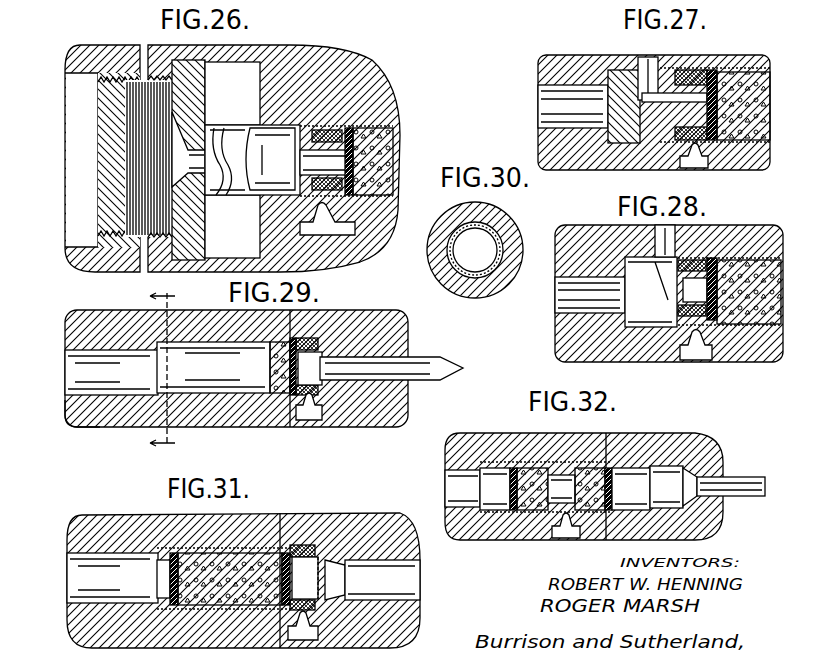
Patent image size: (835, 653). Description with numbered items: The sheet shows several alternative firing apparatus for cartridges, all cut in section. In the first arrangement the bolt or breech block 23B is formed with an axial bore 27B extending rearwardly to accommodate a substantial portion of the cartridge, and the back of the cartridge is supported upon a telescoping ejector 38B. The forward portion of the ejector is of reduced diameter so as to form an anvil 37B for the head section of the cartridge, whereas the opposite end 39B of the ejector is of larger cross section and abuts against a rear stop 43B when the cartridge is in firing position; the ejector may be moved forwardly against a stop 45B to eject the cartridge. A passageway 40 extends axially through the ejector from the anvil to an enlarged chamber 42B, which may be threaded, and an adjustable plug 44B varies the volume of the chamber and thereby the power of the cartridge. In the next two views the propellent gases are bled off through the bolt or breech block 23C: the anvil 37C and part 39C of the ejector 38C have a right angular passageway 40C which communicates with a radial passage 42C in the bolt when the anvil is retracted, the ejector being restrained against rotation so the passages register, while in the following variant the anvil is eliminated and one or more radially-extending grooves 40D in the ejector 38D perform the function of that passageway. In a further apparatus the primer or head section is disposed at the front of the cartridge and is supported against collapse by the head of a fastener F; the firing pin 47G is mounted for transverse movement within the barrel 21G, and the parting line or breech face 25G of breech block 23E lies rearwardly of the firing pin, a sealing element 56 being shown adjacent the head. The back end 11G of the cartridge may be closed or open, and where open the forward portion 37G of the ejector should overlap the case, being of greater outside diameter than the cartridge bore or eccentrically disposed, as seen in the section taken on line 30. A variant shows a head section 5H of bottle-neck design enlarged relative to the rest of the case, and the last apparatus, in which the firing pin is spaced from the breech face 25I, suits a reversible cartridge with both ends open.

In FIG. 26, the opposite end of ejector 39B is at (110, 62).
In FIG. 26, the rear stop 43B is at (78, 76).
In FIG. 26, the adjustable plug 44B is at (97, 202).
In FIG. 26, the enlarged chamber 42B is at (148, 156).
In FIG. 26, the stop 45B is at (260, 78).
In FIG. 26, the telescoping ejector 38B is at (224, 130).
In FIG. 26, the anvil 37B is at (270, 159).
In FIG. 26, the passageway 40 is at (310, 165).
In FIG. 26, the bolt or breech block 23B is at (380, 92).
In FIG. 26, the axial bore 27B is at (398, 130).
In FIG. 27, the bolt or breech block 23C is at (544, 60).
In FIG. 27, the tube 38C is at (545, 106).
In FIG. 27, the radial passage 42C is at (645, 56).
In FIG. 27, the part of ejector 39C is at (672, 68).
In FIG. 27, the anvil 37C is at (710, 70).
In FIG. 27, the right angular passageway 40C is at (674, 103).
In FIG. 28, the radially-extending grooves 40D is at (651, 292).
In FIG. 30, the breech block 23E is at (480, 294).
In FIG. 29, the breech block 23E is at (90, 422).
In FIG. 30, the forward portion of ejector (ejector nose) 37G is at (492, 238).
In FIG. 29, the forward portion of ejector (ejector nose) 37G is at (111, 372).
In FIG. 30, the back end of cartridge 11G is at (480, 228).
In FIG. 29, the back end of cartridge 11G is at (163, 376).
In FIG. 29, the sealing ring 56 is at (306, 338).
In FIG. 29, the fastener F is at (440, 360).
In FIG. 29, the parting line or breech face 25G is at (282, 412).
In FIG. 29, the firing pin 47G is at (300, 426).
In FIG. 29, the barrel 21G is at (360, 420).
In FIG. 29, the section line 30 is at (173, 370).
In FIG. 31, the head section 5H is at (302, 545).
In FIG. 32, the breech face 25I is at (610, 452).
In FIG. 32, the tube 38D is at (447, 490).